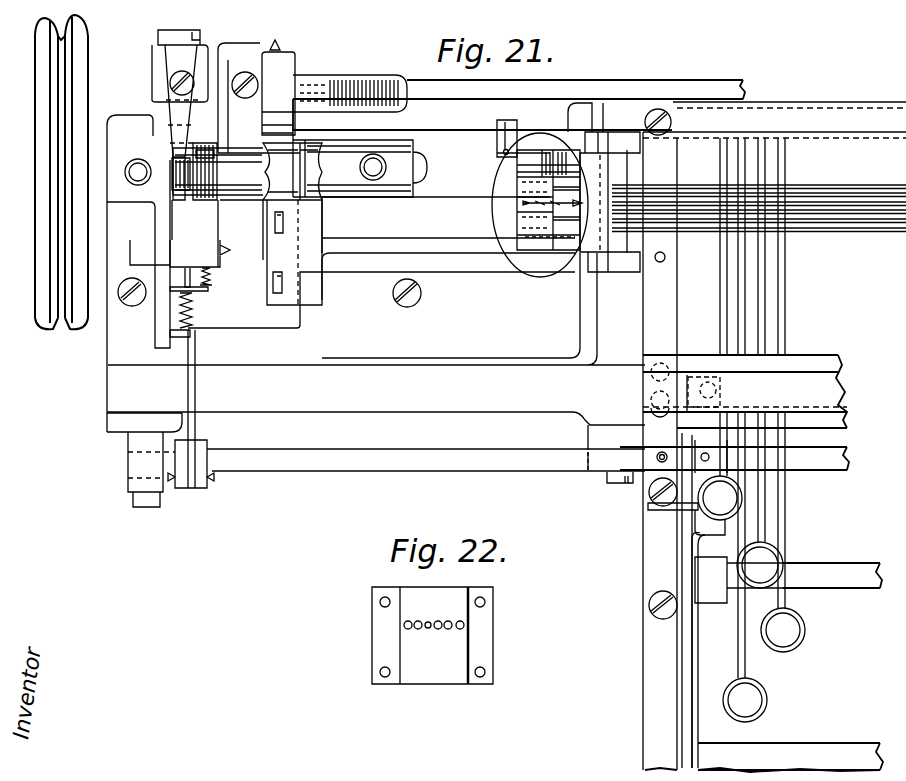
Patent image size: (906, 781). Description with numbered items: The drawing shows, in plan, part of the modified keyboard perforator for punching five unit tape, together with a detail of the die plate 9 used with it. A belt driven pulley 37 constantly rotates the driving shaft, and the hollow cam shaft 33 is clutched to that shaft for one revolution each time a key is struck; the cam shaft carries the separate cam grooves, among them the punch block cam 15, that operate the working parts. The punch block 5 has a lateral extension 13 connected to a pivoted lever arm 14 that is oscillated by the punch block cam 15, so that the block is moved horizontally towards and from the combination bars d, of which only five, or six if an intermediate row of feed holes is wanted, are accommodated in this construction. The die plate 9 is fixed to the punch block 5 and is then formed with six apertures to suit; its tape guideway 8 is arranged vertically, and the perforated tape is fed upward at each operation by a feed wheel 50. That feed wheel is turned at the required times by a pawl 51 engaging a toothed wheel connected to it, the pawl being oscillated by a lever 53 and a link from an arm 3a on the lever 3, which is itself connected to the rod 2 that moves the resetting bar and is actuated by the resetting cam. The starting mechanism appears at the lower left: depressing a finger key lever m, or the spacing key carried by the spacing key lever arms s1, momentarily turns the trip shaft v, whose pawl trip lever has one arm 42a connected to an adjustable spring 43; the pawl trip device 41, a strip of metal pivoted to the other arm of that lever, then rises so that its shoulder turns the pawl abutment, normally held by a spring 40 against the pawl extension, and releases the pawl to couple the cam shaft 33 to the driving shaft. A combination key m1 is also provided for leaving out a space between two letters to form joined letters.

In FIG. 21, the belt driven pulley 37 is at (78, 56).
In FIG. 21, the lever arm 3 is at (262, 126).
In FIG. 21, the arm 3a is at (428, 120).
In FIG. 21, the rod 2 is at (533, 97).
In FIG. 21, the hollow cam shaft 33 is at (258, 190).
In FIG. 21, the punch block cam 15 is at (340, 175).
In FIG. 21, the pivoted lever arm 14 is at (294, 252).
In FIG. 21, the lateral extension 13 is at (448, 231).
In FIG. 21, the spring 40 is at (212, 279).
In FIG. 21, the adjustable spring 43 is at (196, 313).
In FIG. 21, the pawl trip device 41 is at (196, 395).
In FIG. 21, the arm of pawl trip lever 42a is at (211, 490).
In FIG. 21, the trip shaft v is at (303, 436).
In FIG. 21, the lever 53 is at (498, 158).
In FIG. 21, the pawl 51 is at (517, 168).
In FIG. 21, the feed wheel 50 is at (522, 205).
In FIG. 21, the tape guideway 8 is at (520, 227).
In FIG. 21, the punch block 5 is at (604, 187).
In FIG. 21, the combination bars d is at (703, 197).
In FIG. 21, the finger key lever m is at (763, 498).
In FIG. 21, the combination key m1 is at (755, 692).
In FIG. 21, the spacing key lever arms s1 is at (697, 608).
In FIG. 22, the die plate 9 is at (432, 635).